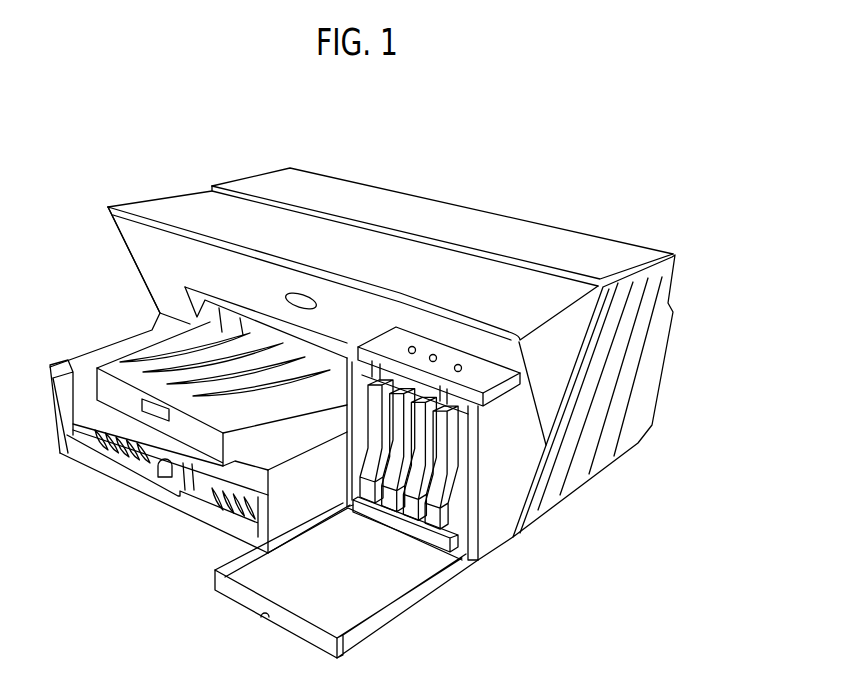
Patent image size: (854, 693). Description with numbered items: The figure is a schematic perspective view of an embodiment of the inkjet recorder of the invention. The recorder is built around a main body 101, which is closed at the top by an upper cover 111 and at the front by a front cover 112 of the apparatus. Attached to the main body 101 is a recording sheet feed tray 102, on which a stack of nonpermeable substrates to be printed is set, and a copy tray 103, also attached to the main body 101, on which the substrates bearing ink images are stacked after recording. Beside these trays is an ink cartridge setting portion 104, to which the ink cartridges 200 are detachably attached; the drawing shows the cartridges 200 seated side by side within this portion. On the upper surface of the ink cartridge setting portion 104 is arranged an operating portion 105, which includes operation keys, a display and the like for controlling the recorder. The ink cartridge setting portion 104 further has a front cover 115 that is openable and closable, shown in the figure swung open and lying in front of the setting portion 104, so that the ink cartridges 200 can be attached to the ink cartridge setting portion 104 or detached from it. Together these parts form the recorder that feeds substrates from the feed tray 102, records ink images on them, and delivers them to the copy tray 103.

The main body 101 is at (507, 174).
The upper cover 111 is at (345, 189).
The front cover of the apparatus 112 is at (133, 258).
The recording sheet feed tray 102 is at (205, 520).
The copy tray 103 is at (105, 388).
The ink cartridge setting portion 104 is at (491, 520).
The operating portion 105 is at (494, 376).
The ink cartridges 200 is at (458, 497).
The front cover 115 is at (237, 597).